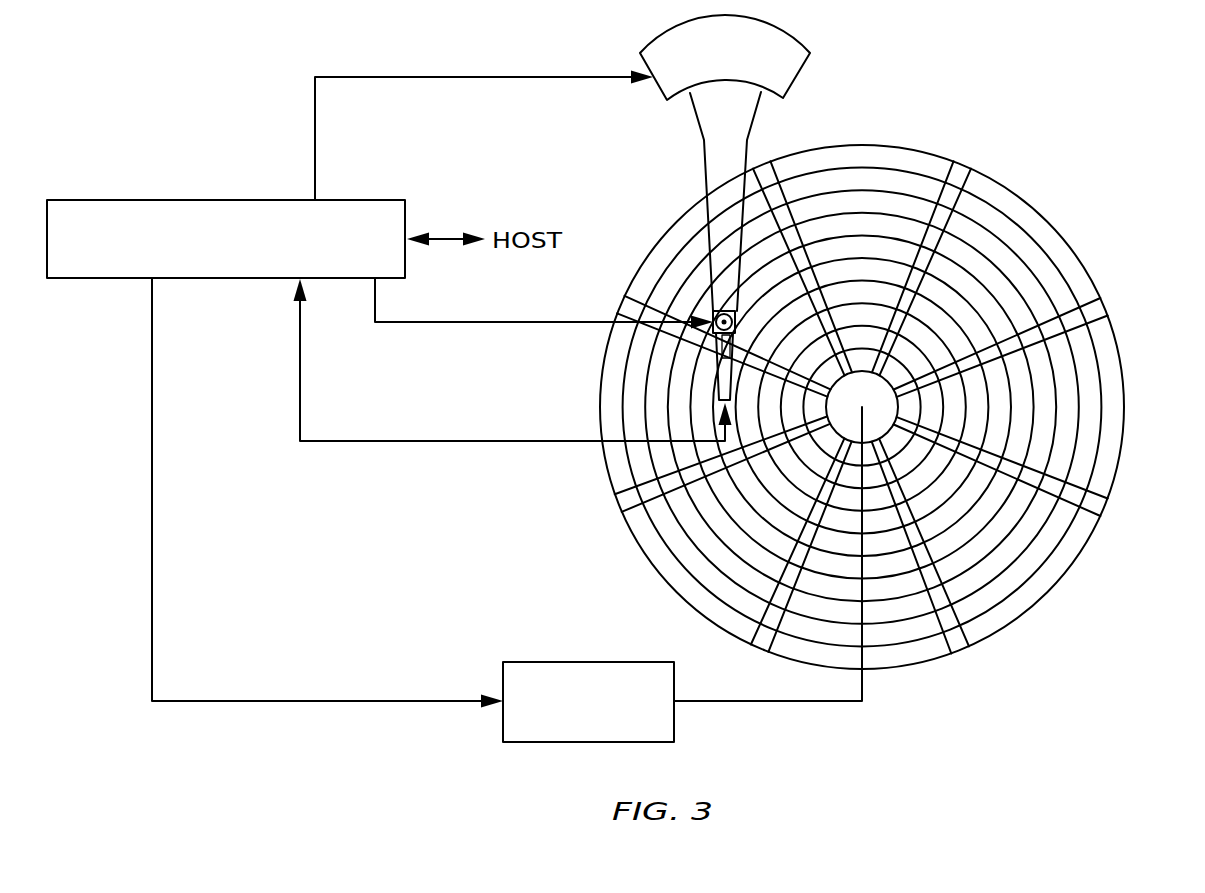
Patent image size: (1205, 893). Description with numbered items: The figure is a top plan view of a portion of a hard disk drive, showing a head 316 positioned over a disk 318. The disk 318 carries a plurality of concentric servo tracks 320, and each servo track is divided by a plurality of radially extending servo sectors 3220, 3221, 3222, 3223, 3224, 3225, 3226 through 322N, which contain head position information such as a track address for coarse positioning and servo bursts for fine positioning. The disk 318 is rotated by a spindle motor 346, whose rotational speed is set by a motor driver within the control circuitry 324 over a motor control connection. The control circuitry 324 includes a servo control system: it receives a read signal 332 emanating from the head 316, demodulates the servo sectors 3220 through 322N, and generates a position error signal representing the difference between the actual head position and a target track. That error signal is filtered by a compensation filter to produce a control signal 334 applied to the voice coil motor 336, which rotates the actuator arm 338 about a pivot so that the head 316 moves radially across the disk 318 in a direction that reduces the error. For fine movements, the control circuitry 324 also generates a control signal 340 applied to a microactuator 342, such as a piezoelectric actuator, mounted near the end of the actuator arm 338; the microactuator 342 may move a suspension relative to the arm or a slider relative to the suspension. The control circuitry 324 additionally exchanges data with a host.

The head 316 is at (692, 396).
The disk 318 is at (879, 378).
The servo tracks 320 is at (846, 177).
The servo sector 3220 is at (965, 170).
The servo sector 3221 is at (1098, 314).
The servo sector 3222 is at (1100, 512).
The servo sector 3223 is at (956, 650).
The servo sector 3224 is at (758, 644).
The servo sector 3225 is at (626, 498).
The servo sector 3226 is at (632, 305).
The servo sector 322N is at (767, 167).
The control circuitry 324 is at (376, 199).
The read signal 332 is at (466, 440).
The control signal 334 is at (314, 130).
The voice coil motor 336 is at (664, 89).
The actuator arm 338 is at (705, 182).
The control signal 340 is at (520, 321).
The microactuator 342 is at (703, 296).
The spindle motor 346 is at (573, 662).